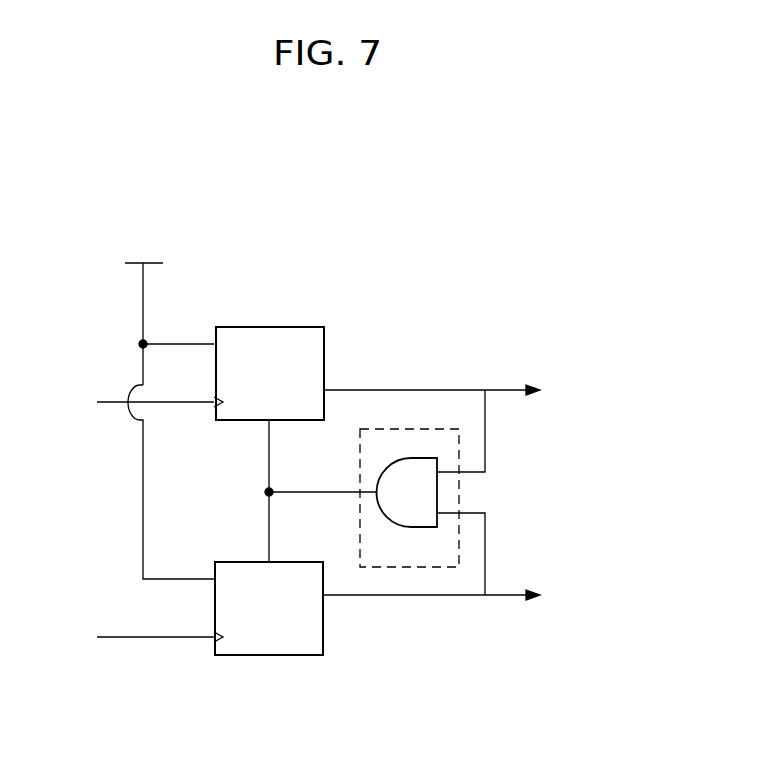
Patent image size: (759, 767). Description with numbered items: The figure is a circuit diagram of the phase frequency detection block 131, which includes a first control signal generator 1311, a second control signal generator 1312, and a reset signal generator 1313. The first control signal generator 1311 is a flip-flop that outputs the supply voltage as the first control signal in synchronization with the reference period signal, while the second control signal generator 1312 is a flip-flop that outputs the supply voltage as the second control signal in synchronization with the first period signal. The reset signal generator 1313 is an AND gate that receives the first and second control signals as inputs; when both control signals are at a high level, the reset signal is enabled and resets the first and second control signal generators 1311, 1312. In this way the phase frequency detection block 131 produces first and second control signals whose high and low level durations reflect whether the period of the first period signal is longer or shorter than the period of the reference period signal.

The phase frequency detection block 131 is at (116, 177).
The first control signal generator 1311 is at (307, 327).
The second control signal generator 1312 is at (307, 655).
The reset signal generator 1313 is at (459, 452).